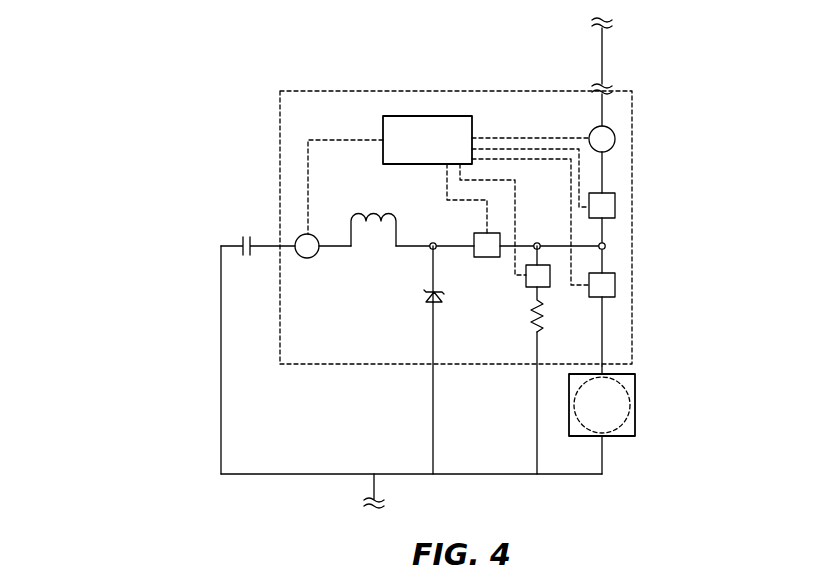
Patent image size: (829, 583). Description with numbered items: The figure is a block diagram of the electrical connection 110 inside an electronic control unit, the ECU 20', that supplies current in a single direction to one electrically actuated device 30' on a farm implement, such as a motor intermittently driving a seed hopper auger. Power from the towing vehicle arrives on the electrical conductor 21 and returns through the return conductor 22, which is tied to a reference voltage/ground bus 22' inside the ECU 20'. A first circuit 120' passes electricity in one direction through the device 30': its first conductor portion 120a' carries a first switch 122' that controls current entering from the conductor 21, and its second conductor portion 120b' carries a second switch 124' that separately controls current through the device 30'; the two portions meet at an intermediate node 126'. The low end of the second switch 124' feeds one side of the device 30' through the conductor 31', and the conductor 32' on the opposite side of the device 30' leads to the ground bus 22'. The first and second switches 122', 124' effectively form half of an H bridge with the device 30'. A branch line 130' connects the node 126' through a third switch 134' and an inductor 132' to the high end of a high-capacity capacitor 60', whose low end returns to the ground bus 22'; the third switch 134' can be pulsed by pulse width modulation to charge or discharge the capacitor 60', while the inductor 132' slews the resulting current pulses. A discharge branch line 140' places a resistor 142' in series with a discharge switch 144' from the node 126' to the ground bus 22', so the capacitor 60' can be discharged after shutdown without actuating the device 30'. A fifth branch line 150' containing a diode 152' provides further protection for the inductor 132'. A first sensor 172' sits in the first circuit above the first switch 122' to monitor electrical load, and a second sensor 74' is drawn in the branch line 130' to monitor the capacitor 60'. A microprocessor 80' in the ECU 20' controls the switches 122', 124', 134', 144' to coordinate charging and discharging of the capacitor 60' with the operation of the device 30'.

The electrical connection 110 is at (181, 64).
The ECU 20' is at (436, 207).
The electrical conductor 21 is at (603, 62).
The electrical return conductor 22 is at (403, 497).
The reference voltage/ground bus 22' is at (411, 455).
The electrically actuated device 30' is at (636, 406).
The conductor 31' is at (653, 365).
The conductor 32' is at (639, 458).
The capacitor 60' is at (231, 230).
The current sensor 74' is at (282, 218).
The microprocessor 80' is at (448, 200).
The first circuit 120' is at (658, 212).
The first conductor portion 120a' is at (668, 104).
The second conductor portion 120b' is at (665, 312).
The first switch 122' is at (652, 190).
The second switch 124' is at (652, 294).
The intermediate node 126' is at (657, 240).
The branch line 130' is at (460, 267).
The inductor 132' is at (359, 208).
The third switch 134' is at (451, 231).
The discharge branch line 140' is at (489, 403).
The resistor 142' is at (496, 314).
The discharge switch 144' is at (496, 267).
The fifth branch line 150' is at (385, 388).
The diode 152' is at (390, 285).
The first sensor 172' is at (651, 131).